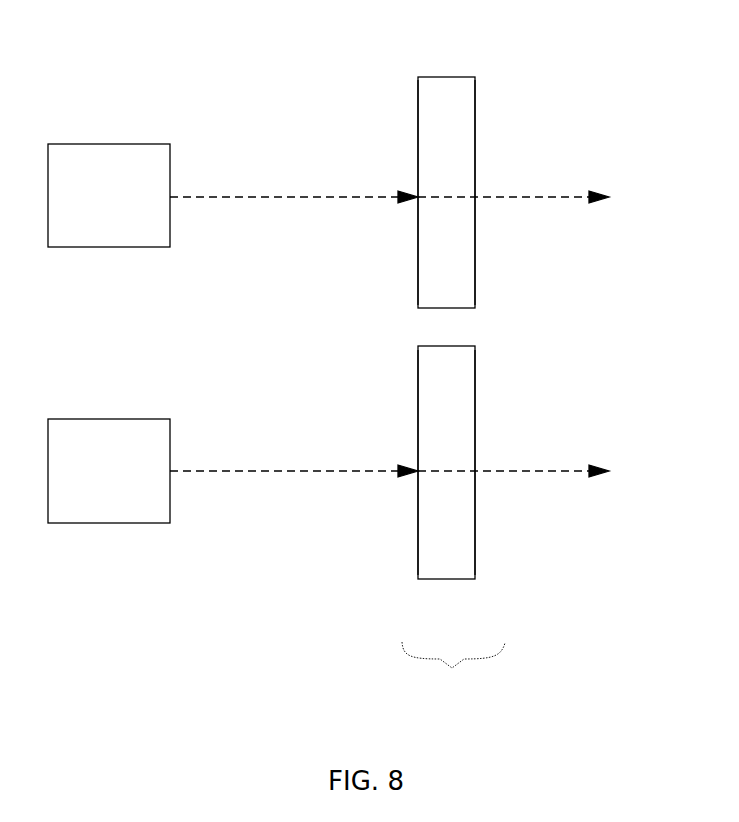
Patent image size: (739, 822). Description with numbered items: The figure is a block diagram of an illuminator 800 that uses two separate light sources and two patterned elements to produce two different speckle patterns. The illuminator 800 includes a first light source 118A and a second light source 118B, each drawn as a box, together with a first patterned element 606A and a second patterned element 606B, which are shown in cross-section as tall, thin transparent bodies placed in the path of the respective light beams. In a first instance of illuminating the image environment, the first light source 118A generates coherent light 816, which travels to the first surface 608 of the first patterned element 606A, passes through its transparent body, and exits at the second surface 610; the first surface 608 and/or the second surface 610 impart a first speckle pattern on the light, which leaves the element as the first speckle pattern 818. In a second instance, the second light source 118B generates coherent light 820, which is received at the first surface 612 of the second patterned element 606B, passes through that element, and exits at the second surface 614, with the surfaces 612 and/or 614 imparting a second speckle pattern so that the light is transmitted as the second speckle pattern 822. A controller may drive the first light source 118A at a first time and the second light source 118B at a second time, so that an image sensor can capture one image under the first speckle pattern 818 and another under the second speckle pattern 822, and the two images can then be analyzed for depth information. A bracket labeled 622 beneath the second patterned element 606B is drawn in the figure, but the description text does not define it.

The illuminator 800 is at (73, 48).
The first light source 118A is at (109, 195).
The second light source 118B is at (109, 471).
The first patterned element 606A is at (444, 77).
The second patterned element 606B is at (448, 580).
The first surface 608 is at (418, 98).
The second surface 610 is at (475, 96).
The first surface 612 is at (418, 367).
The second surface 614 is at (475, 365).
The coherent light 816 is at (205, 193).
The first speckle pattern 818 is at (550, 197).
The coherent light 820 is at (205, 469).
The second speckle pattern 822 is at (550, 470).
The filter thickness 622 is at (453, 675).